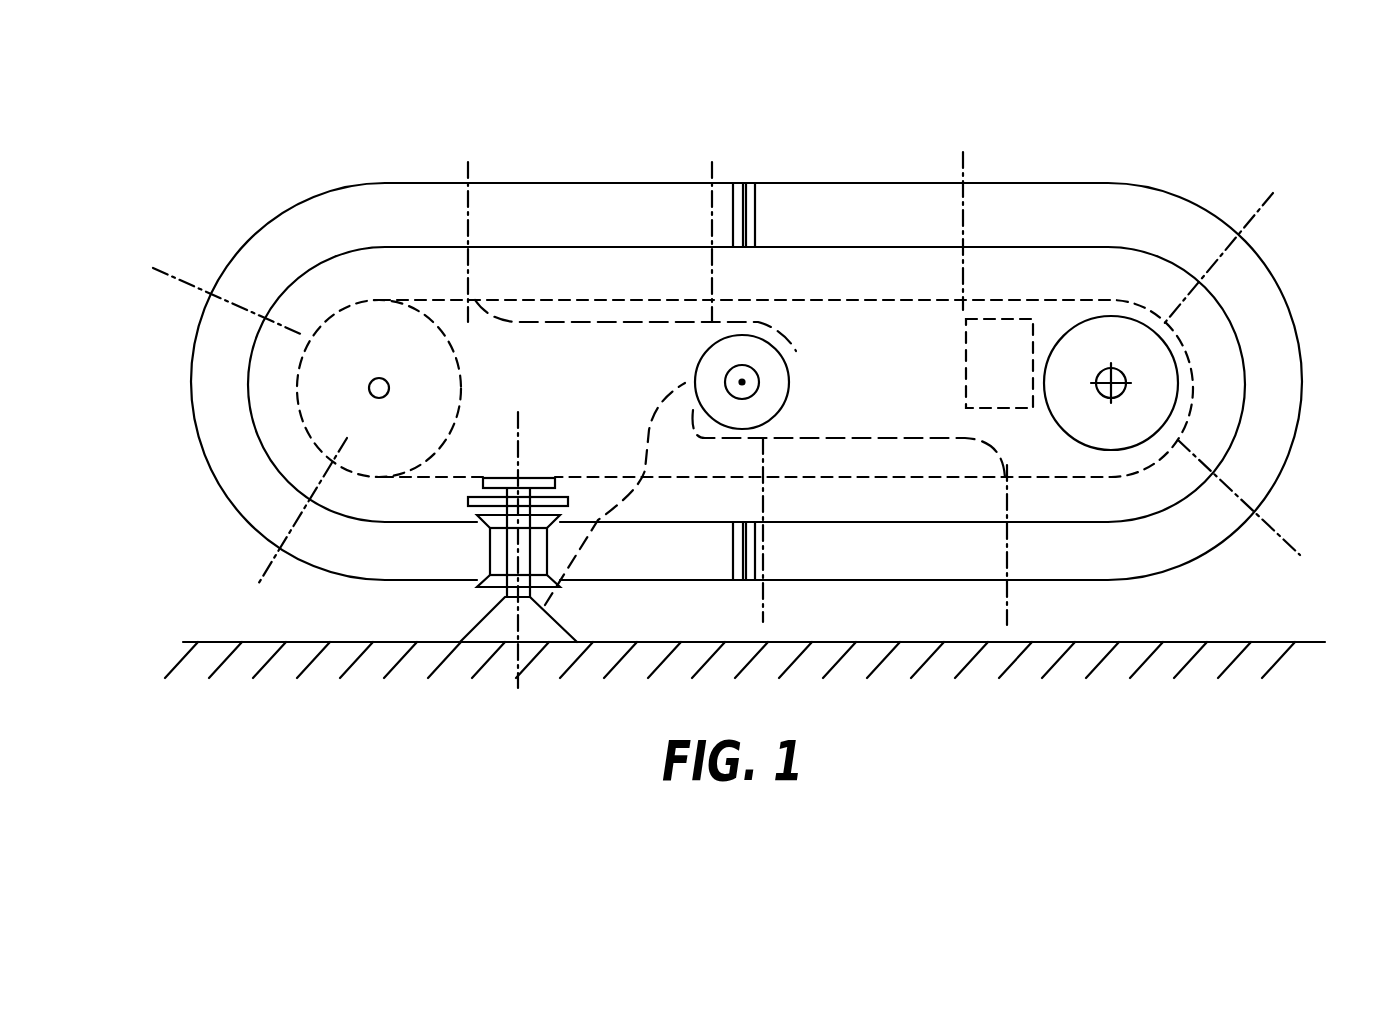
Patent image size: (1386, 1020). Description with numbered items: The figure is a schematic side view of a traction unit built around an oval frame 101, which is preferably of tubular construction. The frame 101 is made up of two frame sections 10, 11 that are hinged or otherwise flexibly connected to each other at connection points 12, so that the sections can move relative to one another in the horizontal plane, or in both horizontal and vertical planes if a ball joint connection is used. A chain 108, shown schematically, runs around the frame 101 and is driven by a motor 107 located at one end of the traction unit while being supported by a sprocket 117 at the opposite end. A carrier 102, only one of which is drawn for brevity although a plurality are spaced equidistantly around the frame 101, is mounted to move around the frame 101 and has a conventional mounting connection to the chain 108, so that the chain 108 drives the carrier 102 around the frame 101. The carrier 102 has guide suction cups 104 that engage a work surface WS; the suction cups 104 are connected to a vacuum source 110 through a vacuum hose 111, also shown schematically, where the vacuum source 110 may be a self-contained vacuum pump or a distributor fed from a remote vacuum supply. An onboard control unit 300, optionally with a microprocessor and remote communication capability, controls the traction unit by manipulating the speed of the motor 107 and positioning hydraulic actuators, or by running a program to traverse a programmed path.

The frame 101 is at (197, 383).
The frame section 10 is at (585, 229).
The frame section 11 is at (868, 229).
The connection point 12 is at (745, 183).
The sprocket 117 is at (330, 317).
The chain 108 is at (866, 478).
The motor 107 is at (1180, 352).
The control unit 300 is at (1018, 377).
The vacuum source 110 is at (788, 363).
The vacuum hose 111 is at (630, 500).
The carrier 102 is at (552, 478).
The guide suction cup 104 is at (545, 605).
The work surface WS is at (205, 642).